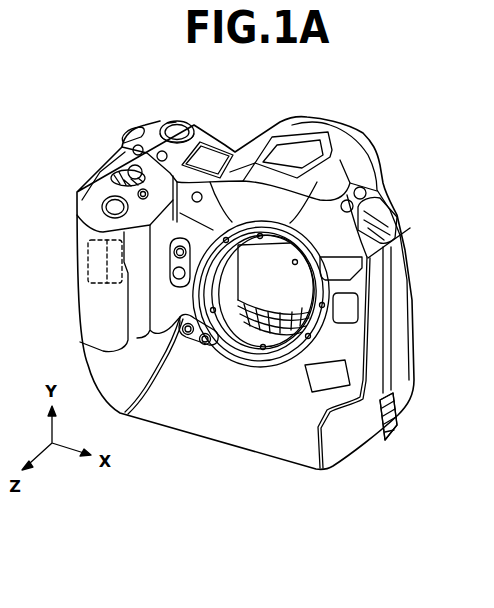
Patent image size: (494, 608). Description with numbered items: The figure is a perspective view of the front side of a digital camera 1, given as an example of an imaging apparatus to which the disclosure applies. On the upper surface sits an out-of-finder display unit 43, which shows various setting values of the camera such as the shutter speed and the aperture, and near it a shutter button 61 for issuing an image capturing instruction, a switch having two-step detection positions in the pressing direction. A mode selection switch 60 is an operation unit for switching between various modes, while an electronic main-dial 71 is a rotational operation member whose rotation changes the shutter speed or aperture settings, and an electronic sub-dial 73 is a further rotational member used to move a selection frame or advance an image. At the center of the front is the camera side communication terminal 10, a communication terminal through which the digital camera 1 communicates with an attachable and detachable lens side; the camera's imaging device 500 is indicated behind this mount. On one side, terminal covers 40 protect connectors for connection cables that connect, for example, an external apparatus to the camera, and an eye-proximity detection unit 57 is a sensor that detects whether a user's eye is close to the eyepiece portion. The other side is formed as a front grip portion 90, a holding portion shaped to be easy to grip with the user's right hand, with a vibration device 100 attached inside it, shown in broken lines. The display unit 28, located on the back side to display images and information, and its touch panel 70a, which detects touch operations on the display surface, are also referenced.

The digital camera 1 is at (400, 141).
The camera side communication terminal 10 is at (242, 340).
The display unit 28 is at (437, 416).
The terminal covers 40 is at (400, 257).
The out-of-finder display unit 43 is at (216, 150).
The eye-proximity detection unit 57 is at (399, 324).
The mode selection switch 60 is at (178, 124).
The shutter button 61 is at (102, 199).
The touch panel 70a is at (437, 418).
The electronic main-dial 71 is at (115, 167).
The electronic sub-dial 73 is at (172, 120).
The front grip portion 90 is at (98, 314).
The vibration device 100 is at (88, 269).
The imaging device 500 is at (279, 284).